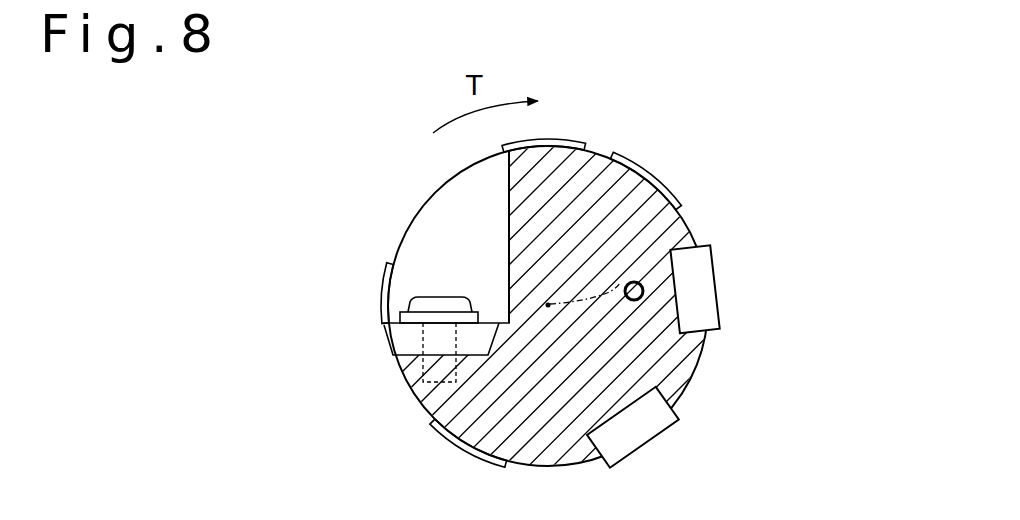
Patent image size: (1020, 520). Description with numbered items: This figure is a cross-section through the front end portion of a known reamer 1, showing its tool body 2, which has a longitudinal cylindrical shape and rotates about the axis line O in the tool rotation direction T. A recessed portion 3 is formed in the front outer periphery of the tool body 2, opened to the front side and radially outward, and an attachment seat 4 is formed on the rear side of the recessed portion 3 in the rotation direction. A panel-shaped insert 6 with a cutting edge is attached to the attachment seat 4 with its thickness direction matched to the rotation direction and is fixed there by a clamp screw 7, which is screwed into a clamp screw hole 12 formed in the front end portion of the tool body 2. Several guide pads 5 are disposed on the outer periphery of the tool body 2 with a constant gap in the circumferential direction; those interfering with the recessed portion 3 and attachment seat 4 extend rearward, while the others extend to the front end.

The reamer 1 is at (543, 303).
The tool body 2 is at (711, 354).
The recessed portion 3 is at (431, 207).
The attachment seat 4 is at (387, 329).
The guide pads 5 is at (573, 143).
The insert 6 is at (400, 331).
The clamp screw 7 is at (450, 303).
The clamp screw hole 12 is at (413, 395).